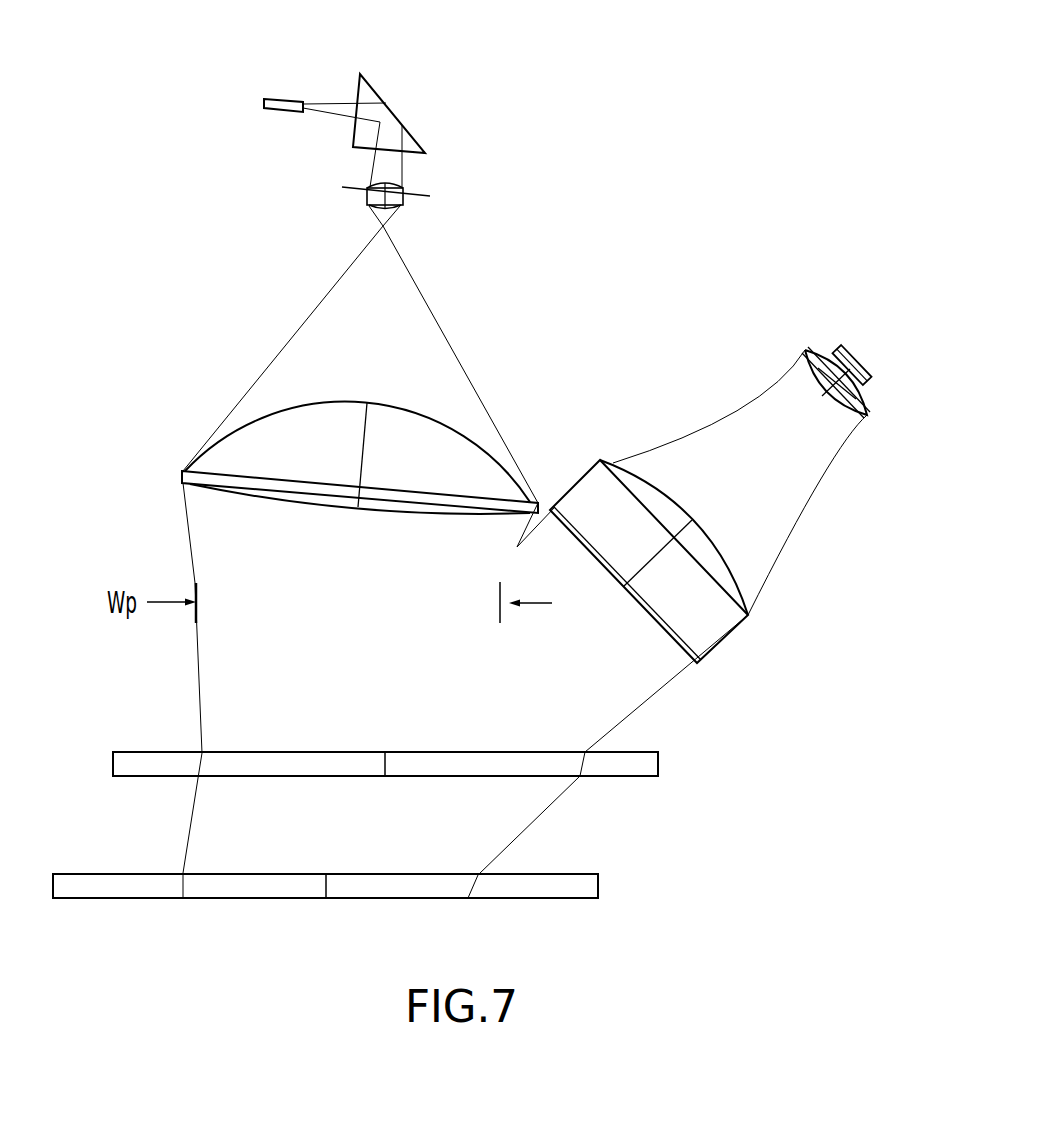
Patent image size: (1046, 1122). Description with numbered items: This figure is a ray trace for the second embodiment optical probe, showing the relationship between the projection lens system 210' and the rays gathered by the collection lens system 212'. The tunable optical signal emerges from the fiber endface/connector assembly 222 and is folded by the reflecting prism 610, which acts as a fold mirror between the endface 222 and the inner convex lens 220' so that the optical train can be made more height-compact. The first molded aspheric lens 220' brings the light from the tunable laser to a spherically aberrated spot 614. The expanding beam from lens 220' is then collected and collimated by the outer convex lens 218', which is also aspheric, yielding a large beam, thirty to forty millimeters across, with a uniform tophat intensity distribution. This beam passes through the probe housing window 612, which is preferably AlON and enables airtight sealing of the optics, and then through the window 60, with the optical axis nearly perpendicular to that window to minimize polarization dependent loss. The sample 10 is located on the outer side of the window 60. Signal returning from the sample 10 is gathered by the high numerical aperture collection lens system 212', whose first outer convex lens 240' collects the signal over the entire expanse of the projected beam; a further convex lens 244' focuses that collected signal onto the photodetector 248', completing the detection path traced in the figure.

The fiber endface/connector assembly 222 is at (283, 98).
The reflecting prism 610 is at (415, 135).
The inner convex lens 220' is at (428, 164).
The spherically aberrated spot 614 is at (377, 226).
The projection lens system 210' is at (386, 364).
The outer convex lens 218' is at (381, 434).
The first outer convex lens 240' is at (676, 605).
The condenser lens 244' is at (879, 416).
The detector 248' is at (873, 320).
The collection lens system 212' is at (686, 756).
The probe housing window 612 is at (660, 762).
The window 60 is at (590, 882).
The sample 10 is at (280, 898).